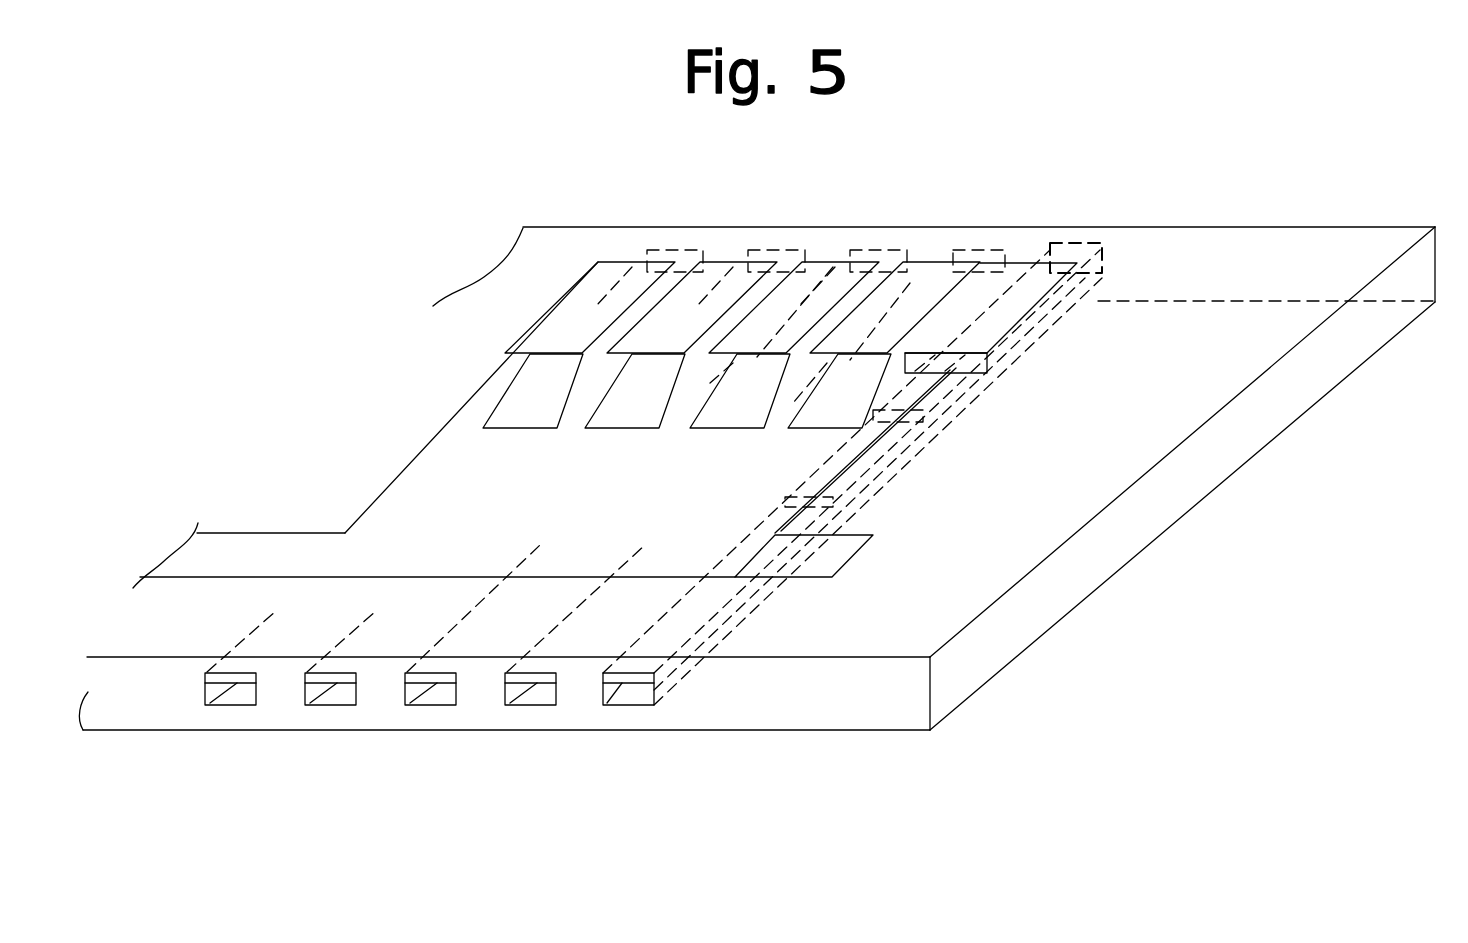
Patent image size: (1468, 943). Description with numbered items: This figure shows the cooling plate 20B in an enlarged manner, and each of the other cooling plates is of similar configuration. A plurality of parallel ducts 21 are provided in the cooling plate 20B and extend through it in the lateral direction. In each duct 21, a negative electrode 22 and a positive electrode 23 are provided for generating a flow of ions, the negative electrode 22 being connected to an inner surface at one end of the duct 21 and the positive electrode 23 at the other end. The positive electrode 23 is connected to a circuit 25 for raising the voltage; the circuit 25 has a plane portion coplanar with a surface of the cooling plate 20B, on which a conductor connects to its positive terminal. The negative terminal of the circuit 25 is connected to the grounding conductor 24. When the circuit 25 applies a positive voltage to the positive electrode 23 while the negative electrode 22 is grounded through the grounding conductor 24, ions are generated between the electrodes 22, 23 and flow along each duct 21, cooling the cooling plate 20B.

The cooling plate 20B is at (1202, 267).
The duct 21 is at (640, 698).
The negative electrode 22 is at (613, 705).
The positive electrode 23 is at (1083, 247).
The grounding conductor 24 is at (818, 570).
The circuit 25 is at (1017, 263).